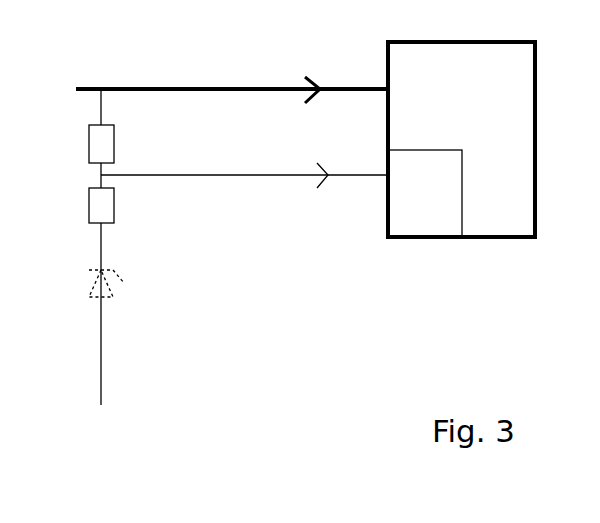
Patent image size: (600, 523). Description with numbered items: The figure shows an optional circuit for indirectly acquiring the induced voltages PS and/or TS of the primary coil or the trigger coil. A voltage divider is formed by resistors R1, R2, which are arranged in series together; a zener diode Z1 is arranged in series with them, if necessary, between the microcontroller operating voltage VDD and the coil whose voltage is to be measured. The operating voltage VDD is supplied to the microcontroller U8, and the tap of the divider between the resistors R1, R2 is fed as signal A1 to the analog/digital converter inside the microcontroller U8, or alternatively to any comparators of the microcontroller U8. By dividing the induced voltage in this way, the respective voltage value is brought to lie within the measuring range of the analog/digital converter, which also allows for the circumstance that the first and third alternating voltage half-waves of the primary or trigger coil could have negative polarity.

The resistor R1 is at (73, 142).
The resistor R2 is at (73, 204).
The zener diode Z1 is at (83, 287).
The microcontroller U8 is at (461, 120).
The microcontroller operating voltage VDD is at (232, 72).
The analog input signal A1 is at (244, 163).